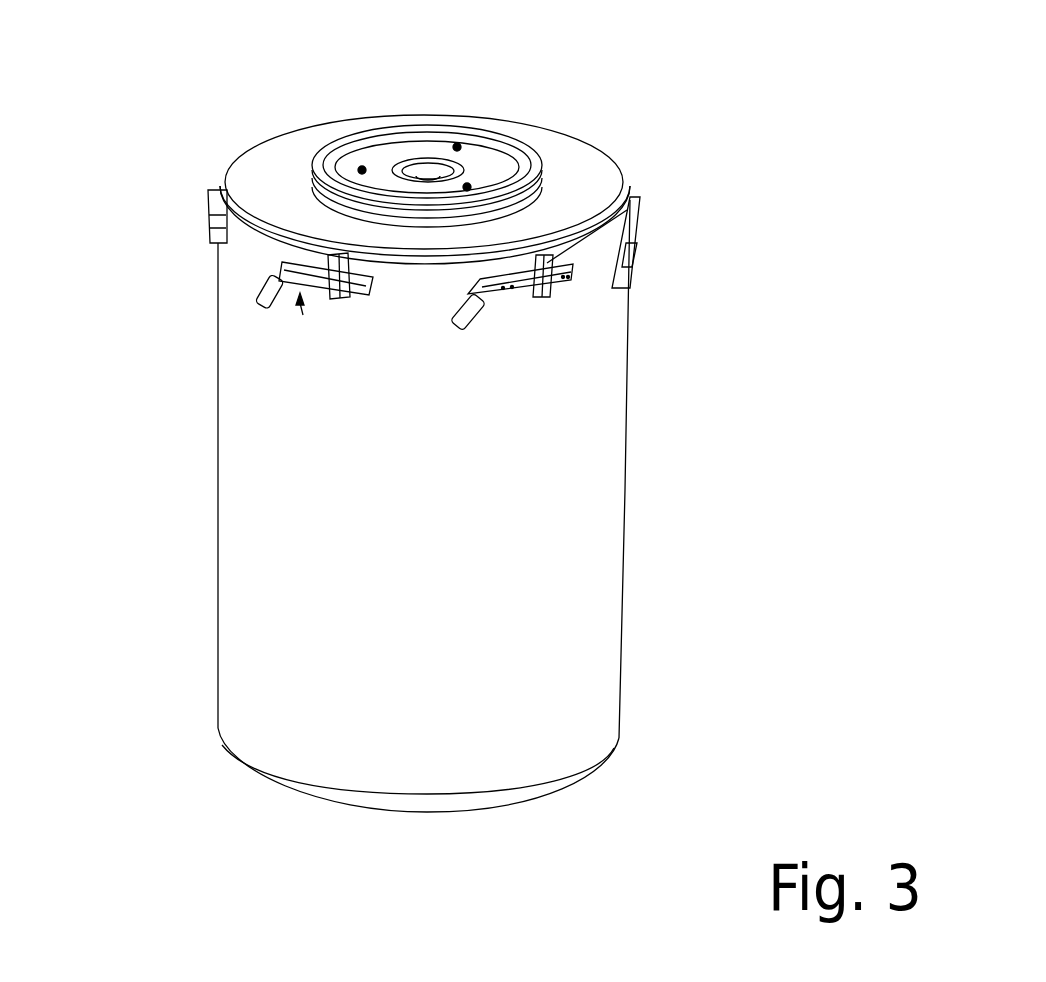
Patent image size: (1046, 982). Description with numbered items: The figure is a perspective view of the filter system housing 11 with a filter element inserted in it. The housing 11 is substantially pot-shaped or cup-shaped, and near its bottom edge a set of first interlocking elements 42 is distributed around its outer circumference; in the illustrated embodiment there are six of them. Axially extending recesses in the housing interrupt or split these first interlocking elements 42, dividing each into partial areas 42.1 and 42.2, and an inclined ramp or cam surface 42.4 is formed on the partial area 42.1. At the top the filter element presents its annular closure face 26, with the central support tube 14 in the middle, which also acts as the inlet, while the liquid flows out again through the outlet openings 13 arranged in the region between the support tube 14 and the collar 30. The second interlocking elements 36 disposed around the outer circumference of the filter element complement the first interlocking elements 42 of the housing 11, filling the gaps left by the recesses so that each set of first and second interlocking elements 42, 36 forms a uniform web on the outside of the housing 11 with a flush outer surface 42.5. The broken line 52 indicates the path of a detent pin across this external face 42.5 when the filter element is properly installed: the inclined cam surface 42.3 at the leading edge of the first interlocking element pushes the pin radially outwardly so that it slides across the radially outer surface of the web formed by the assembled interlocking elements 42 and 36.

The housing 11 is at (588, 500).
The outlet openings 13 is at (345, 163).
The central support tube 14 is at (430, 177).
The annular closure face 26 is at (563, 163).
The collar 30 is at (328, 137).
The second interlocking elements 36 is at (215, 237).
The first interlocking elements 42 is at (510, 297).
The partial area 42.1 is at (297, 295).
The partial area 42.2 is at (348, 300).
The inclined cam surface 42.3 is at (267, 290).
The inclined ramp or cam surface 42.4 is at (305, 303).
The flush outer surface 42.5 is at (657, 239).
The broken line 52 is at (643, 213).